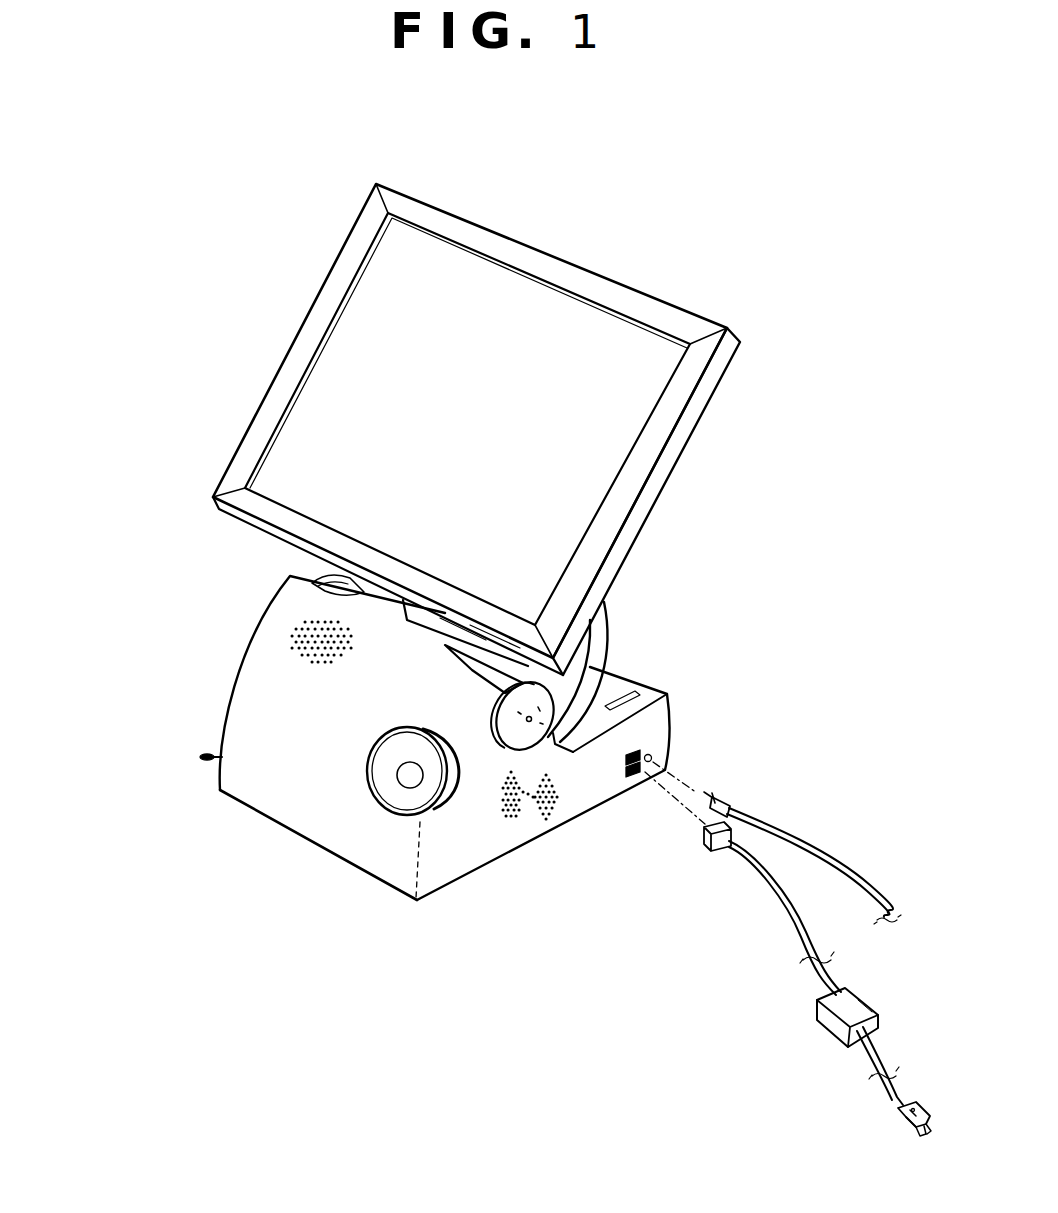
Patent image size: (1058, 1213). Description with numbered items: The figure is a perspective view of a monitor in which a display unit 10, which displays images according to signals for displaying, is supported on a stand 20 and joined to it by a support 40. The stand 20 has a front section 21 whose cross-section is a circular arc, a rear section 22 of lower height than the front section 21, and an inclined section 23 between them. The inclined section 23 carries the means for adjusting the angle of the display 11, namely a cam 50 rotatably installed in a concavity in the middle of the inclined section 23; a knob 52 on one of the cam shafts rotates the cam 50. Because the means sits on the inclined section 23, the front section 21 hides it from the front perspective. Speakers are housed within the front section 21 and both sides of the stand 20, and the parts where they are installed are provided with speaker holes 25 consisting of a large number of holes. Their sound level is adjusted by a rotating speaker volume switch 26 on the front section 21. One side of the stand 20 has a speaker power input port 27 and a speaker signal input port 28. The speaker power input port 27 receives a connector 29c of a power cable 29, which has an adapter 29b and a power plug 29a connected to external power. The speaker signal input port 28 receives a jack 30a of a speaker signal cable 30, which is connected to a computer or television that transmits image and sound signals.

The display unit 10 is at (441, 421).
The display 11 is at (320, 403).
The stand 20 is at (426, 754).
The front section 21 is at (253, 697).
The rear section 22 is at (670, 707).
The inclined section 23 is at (597, 610).
The speaker holes 25 is at (294, 638).
The speaker volume switch 26 is at (388, 790).
The speaker power input port 27 is at (638, 777).
The speaker signal input port 28 is at (652, 758).
The power cable 29 is at (797, 917).
The power plug 29a is at (903, 1113).
The adapter 29b is at (825, 1025).
The connector 29c is at (702, 843).
The speaker signal cable 30 is at (818, 845).
The jack 30a is at (723, 793).
The support 40 is at (597, 650).
The cam 50 is at (443, 730).
The knob 52 is at (330, 578).